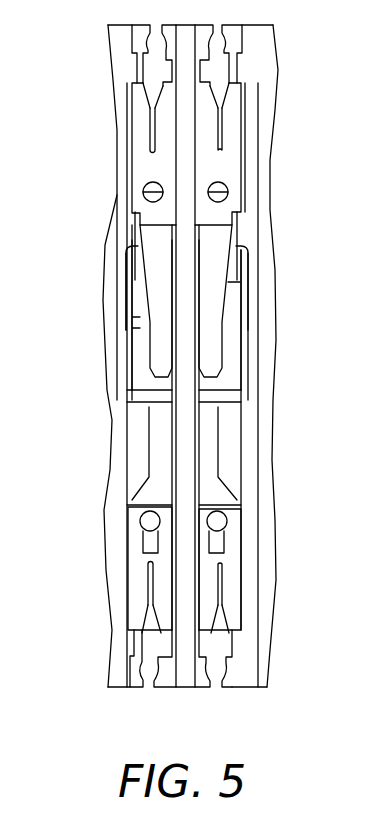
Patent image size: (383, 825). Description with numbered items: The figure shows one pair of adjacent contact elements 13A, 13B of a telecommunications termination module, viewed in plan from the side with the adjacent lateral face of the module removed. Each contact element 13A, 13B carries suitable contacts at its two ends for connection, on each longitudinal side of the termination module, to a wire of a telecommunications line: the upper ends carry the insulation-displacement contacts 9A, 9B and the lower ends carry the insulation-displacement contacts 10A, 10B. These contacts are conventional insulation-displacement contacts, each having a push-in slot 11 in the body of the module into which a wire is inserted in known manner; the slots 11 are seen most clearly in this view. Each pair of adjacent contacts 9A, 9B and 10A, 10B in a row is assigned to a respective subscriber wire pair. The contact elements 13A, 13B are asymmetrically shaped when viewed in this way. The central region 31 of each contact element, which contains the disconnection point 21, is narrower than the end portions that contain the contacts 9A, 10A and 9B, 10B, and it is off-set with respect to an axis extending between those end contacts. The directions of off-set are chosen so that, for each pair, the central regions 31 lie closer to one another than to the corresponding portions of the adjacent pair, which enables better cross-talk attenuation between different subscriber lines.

The insulation-displacement contact 9A is at (155, 92).
The insulation-displacement contact 9B is at (220, 84).
The push-in slot 11 is at (150, 127).
The contact element 13A is at (140, 168).
The contact element 13B is at (230, 168).
The disconnection point 21 is at (160, 362).
The central region 31 is at (143, 341).
The insulation-displacement contact 10A is at (148, 618).
The insulation-displacement contact 10B is at (218, 618).